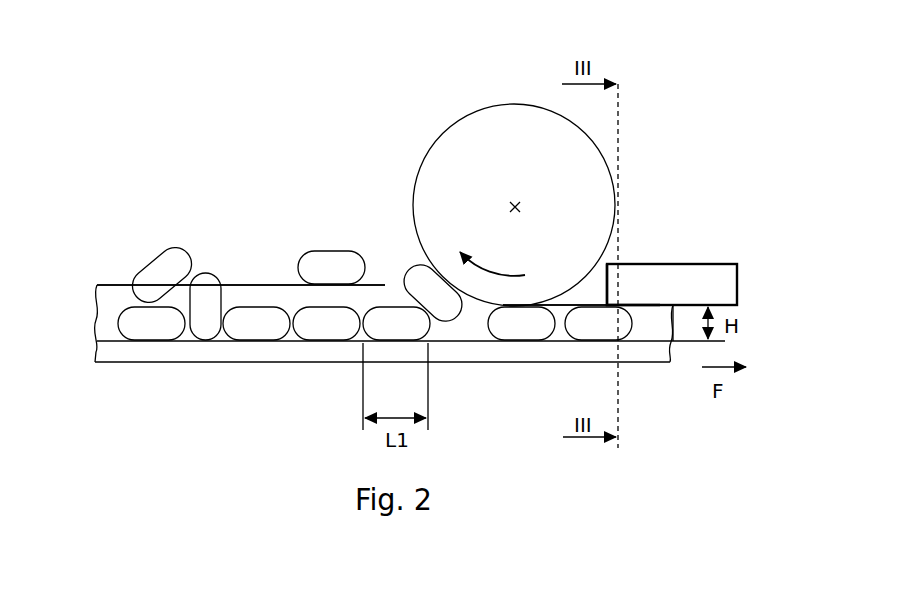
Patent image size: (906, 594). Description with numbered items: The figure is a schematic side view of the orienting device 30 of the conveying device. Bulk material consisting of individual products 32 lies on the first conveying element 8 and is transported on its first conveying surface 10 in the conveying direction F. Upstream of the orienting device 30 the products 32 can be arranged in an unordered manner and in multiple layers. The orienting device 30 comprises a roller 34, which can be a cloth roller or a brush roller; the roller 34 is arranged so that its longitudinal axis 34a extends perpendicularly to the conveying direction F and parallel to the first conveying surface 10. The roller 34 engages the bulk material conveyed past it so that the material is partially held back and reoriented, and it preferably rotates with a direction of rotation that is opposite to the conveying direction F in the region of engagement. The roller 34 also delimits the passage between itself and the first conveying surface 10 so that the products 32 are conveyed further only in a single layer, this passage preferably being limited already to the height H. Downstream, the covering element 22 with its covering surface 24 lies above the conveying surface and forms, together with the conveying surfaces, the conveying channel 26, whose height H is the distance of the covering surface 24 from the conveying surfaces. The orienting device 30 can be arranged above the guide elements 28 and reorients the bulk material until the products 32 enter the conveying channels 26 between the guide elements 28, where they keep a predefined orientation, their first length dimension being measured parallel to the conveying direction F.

The first conveying element 8 is at (285, 353).
The first conveying surface 10 is at (358, 343).
The covering element 22 is at (683, 277).
The covering surface 24 is at (648, 305).
The conveying channel 26 is at (650, 327).
The guide element 28 is at (238, 286).
The orienting device 30 is at (327, 133).
The product 32 is at (254, 325).
The roller 34 is at (450, 157).
The longitudinal axis 34a is at (513, 198).